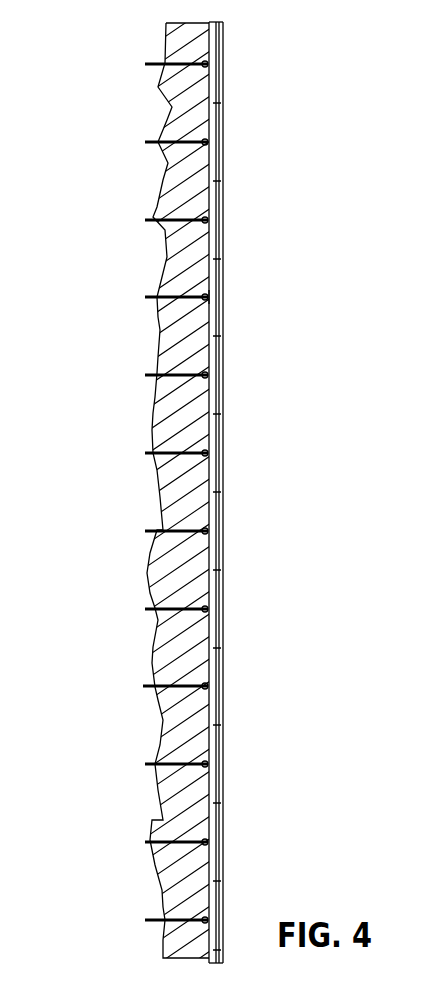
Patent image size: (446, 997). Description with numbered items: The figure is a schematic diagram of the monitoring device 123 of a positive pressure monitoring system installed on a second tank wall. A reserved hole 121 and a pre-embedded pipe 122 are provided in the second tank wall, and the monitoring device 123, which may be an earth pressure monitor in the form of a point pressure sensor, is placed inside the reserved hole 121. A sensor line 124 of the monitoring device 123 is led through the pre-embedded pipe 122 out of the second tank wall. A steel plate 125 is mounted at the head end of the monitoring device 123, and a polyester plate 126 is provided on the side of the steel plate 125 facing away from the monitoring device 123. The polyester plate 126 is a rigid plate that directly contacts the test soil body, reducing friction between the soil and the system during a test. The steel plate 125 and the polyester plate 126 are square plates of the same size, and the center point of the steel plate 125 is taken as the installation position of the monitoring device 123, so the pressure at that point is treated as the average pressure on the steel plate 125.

The reserved hole 121 is at (162, 322).
The pre-embedded pipe 122 is at (182, 377).
The monitoring device 123 is at (202, 296).
The sensor line 124 is at (149, 457).
The steel plate 125 is at (216, 296).
The polyester plate 126 is at (224, 242).